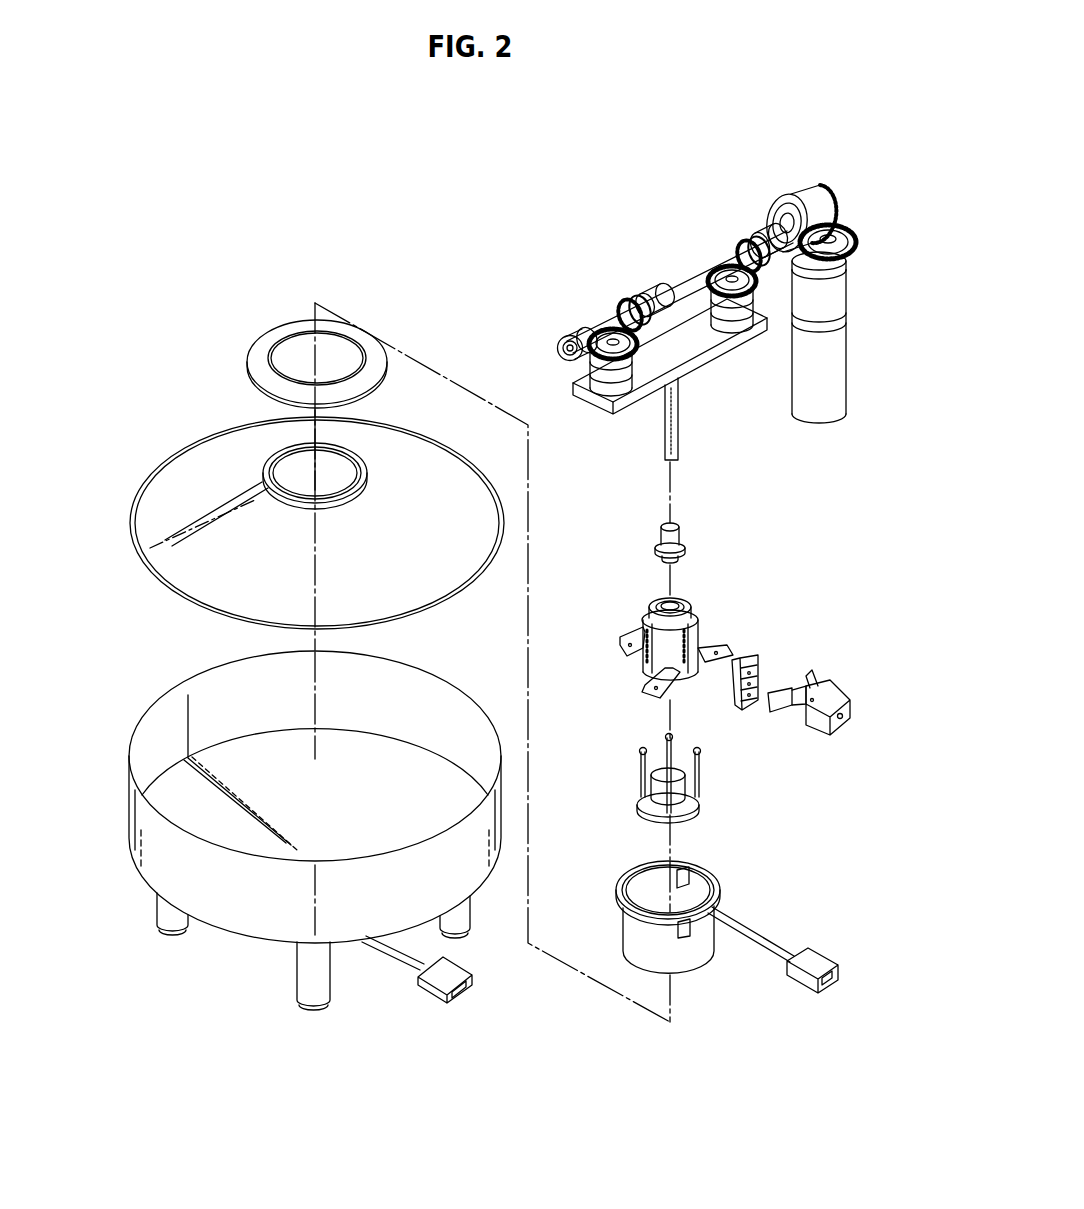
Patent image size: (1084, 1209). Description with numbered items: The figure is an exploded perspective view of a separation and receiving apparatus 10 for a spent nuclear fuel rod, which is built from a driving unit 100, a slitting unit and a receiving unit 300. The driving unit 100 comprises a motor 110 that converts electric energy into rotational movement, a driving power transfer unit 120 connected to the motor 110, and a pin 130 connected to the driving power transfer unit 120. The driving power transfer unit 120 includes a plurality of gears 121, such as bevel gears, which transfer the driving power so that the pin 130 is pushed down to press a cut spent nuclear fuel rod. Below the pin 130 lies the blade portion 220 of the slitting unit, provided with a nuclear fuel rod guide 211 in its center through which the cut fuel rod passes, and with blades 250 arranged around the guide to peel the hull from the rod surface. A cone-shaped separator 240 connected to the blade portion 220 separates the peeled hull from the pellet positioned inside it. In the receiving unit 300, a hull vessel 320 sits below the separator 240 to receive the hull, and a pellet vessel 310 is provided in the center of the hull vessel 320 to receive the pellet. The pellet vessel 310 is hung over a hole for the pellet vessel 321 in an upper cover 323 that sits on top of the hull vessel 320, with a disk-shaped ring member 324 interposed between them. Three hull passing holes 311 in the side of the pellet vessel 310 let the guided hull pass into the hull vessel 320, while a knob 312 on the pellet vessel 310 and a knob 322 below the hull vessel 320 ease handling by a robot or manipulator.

The separation and receiving apparatus 10 is at (240, 175).
The driving unit 100 is at (666, 281).
The motor 110 is at (835, 352).
The driving power transfer unit 120 is at (847, 259).
The gears 121 is at (822, 208).
The pin 130 is at (681, 431).
The nuclear fuel rod guide 211 is at (680, 600).
The blade portion 220 is at (730, 624).
The separator 240 is at (708, 765).
The blades 250 is at (772, 660).
The receiving unit 300 is at (278, 674).
The pellet vessel 310 is at (731, 935).
The hull passing hole 311 is at (684, 878).
The knob 312 is at (816, 960).
The hull vessel 320 is at (250, 928).
The hole for the pellet vessel 321 is at (294, 464).
The knob 322 is at (420, 1000).
The upper cover 323 is at (304, 517).
The disk-shaped ring member 324 is at (268, 341).